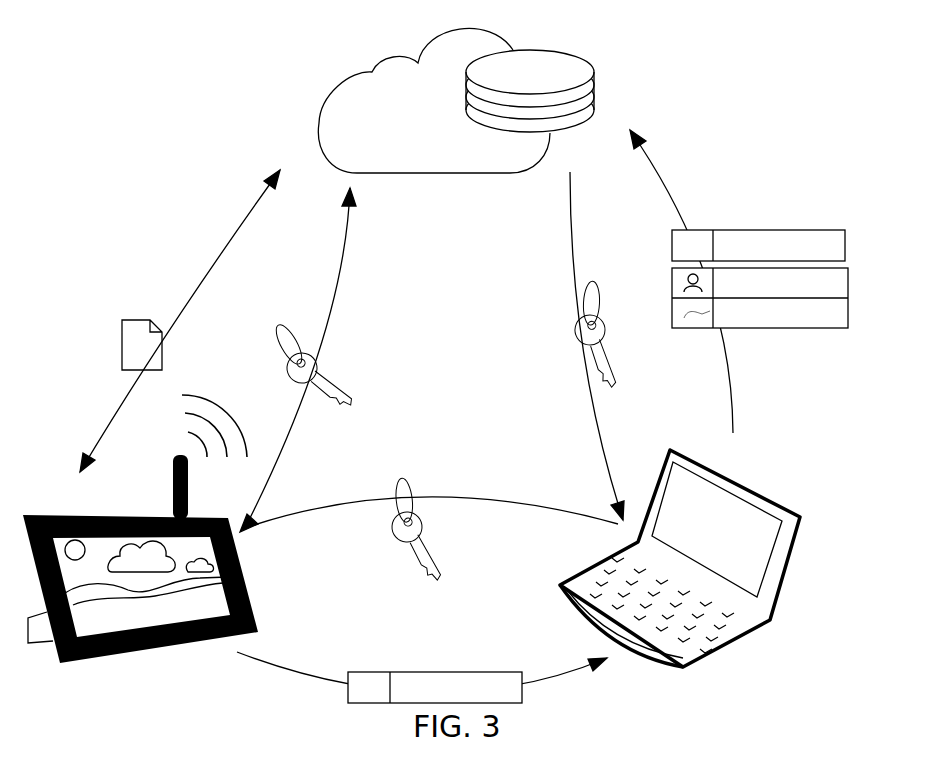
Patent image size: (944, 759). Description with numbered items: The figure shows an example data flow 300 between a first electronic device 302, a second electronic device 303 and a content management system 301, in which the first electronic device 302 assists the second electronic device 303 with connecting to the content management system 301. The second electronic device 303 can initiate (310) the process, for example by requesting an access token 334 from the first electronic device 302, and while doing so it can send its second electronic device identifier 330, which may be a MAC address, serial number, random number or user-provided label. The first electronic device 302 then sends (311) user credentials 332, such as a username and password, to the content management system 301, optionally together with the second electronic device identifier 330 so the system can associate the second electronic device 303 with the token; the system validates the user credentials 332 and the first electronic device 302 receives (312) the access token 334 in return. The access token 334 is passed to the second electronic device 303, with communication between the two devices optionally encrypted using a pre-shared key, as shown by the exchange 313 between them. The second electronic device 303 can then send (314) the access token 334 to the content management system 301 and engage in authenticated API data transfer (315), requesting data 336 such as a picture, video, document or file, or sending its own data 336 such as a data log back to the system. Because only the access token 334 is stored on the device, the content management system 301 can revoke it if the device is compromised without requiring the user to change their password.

The example data flow 300 is at (793, 97).
The content management system 301 is at (603, 77).
The first electronic device 302 is at (755, 490).
The second electronic device 303 is at (258, 622).
The initiating a data flow process 310 is at (567, 673).
The sending user credentials 311 is at (735, 383).
The receiving access token 312 is at (570, 235).
The key exchange between devices 313 is at (510, 505).
The sending access token 314 is at (345, 252).
The authenticated API data transfer 315 is at (200, 275).
The second electronic device identifier 330 is at (846, 243).
The user credentials 332 is at (849, 307).
The access token 334 is at (342, 372).
The requested data 336 is at (147, 338).